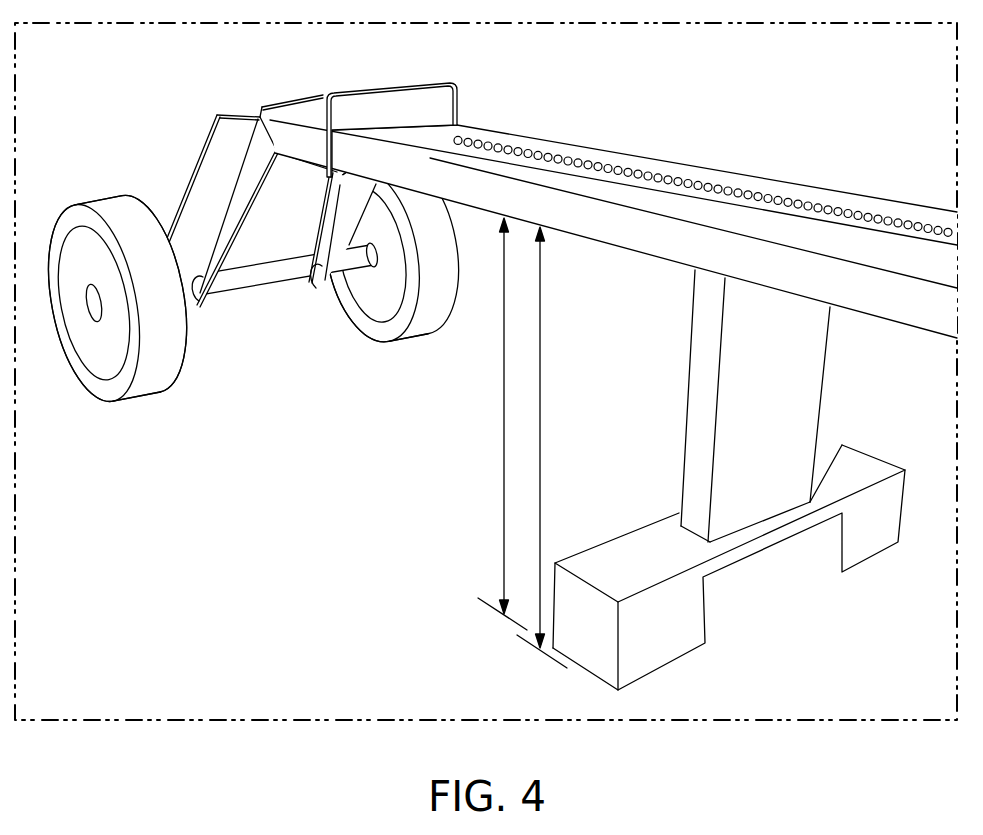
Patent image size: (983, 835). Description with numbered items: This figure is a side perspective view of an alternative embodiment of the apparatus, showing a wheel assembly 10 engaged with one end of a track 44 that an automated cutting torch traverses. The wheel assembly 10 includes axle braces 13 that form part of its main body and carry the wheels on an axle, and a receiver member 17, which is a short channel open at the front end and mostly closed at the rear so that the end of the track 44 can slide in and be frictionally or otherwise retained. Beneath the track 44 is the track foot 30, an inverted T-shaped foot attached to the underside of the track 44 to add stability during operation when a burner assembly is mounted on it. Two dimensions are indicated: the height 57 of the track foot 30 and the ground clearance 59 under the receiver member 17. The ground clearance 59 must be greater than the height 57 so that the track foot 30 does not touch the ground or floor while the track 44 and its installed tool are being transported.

The wheel assembly 10 is at (512, 65).
The axle brace 13 is at (213, 175).
The receiver member 17 is at (296, 168).
The track 44 is at (678, 246).
The track foot 30 is at (677, 638).
The height of the track foot 57 is at (502, 424).
The ground clearance 59 is at (542, 447).